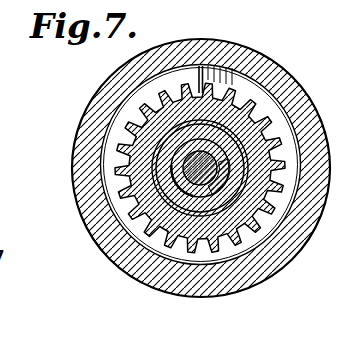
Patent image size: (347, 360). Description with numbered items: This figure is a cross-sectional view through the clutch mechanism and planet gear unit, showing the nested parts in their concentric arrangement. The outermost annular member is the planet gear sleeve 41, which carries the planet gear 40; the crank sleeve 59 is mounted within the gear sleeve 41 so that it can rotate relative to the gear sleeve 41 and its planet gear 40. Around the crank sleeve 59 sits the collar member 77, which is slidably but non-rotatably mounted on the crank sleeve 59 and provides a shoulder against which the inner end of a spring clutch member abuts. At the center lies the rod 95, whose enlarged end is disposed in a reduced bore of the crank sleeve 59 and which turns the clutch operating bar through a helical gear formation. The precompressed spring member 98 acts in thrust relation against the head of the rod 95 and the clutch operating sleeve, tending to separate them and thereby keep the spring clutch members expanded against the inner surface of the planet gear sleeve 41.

The planet gear 40 is at (218, 46).
The planet gear sleeve 41 is at (203, 53).
The collar member 77 is at (137, 107).
The rod 95 is at (195, 162).
The precompressed spring member 98 is at (165, 170).
The crank sleeve 59 is at (158, 212).